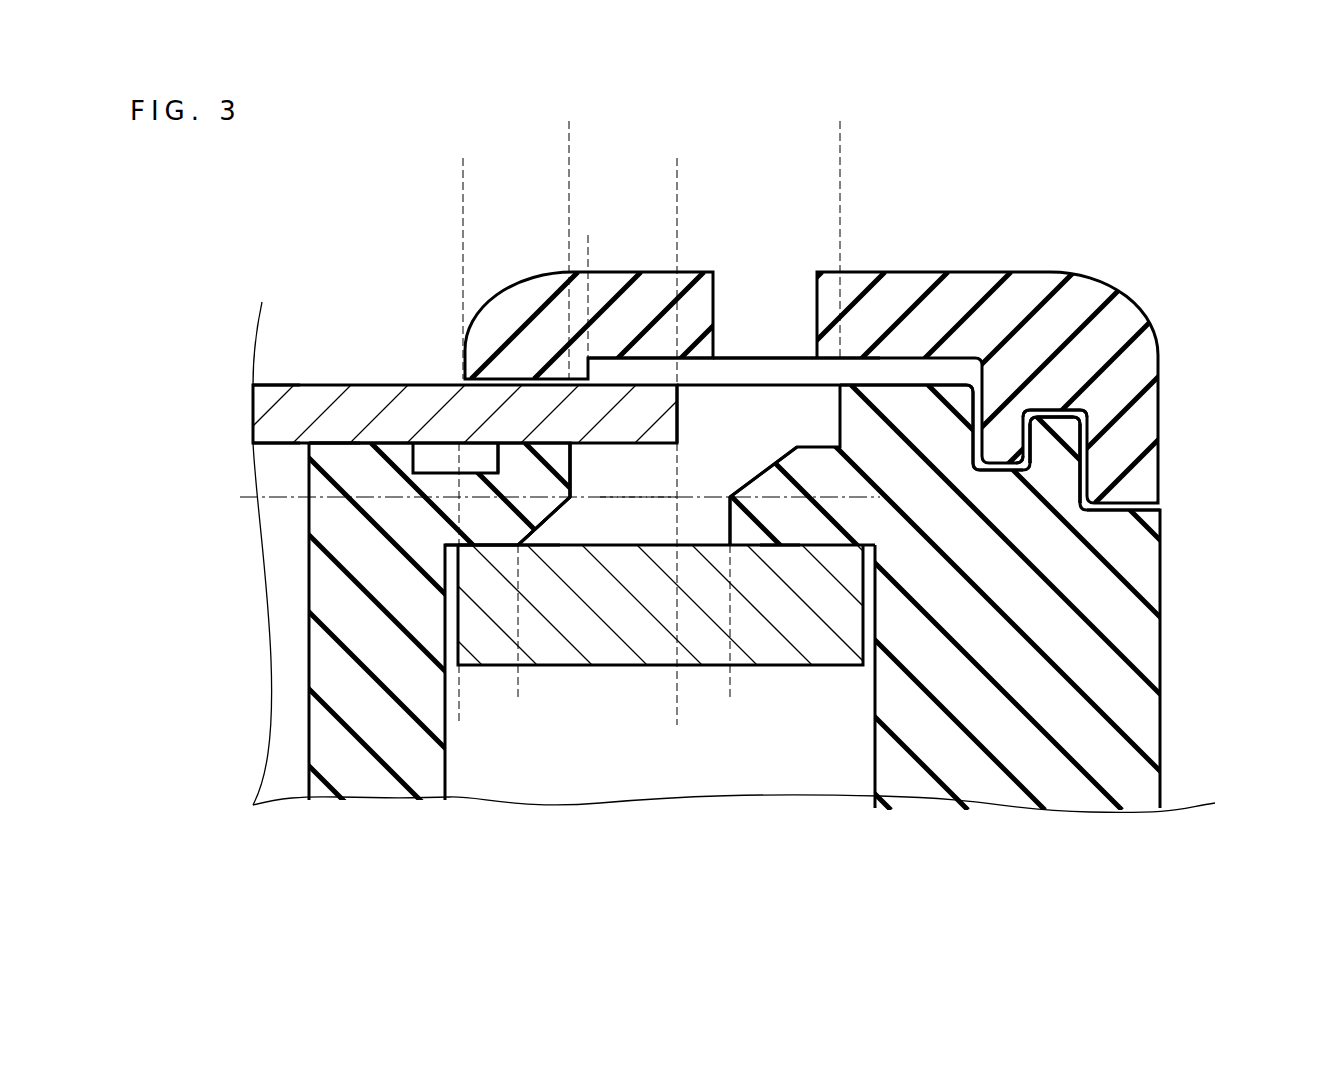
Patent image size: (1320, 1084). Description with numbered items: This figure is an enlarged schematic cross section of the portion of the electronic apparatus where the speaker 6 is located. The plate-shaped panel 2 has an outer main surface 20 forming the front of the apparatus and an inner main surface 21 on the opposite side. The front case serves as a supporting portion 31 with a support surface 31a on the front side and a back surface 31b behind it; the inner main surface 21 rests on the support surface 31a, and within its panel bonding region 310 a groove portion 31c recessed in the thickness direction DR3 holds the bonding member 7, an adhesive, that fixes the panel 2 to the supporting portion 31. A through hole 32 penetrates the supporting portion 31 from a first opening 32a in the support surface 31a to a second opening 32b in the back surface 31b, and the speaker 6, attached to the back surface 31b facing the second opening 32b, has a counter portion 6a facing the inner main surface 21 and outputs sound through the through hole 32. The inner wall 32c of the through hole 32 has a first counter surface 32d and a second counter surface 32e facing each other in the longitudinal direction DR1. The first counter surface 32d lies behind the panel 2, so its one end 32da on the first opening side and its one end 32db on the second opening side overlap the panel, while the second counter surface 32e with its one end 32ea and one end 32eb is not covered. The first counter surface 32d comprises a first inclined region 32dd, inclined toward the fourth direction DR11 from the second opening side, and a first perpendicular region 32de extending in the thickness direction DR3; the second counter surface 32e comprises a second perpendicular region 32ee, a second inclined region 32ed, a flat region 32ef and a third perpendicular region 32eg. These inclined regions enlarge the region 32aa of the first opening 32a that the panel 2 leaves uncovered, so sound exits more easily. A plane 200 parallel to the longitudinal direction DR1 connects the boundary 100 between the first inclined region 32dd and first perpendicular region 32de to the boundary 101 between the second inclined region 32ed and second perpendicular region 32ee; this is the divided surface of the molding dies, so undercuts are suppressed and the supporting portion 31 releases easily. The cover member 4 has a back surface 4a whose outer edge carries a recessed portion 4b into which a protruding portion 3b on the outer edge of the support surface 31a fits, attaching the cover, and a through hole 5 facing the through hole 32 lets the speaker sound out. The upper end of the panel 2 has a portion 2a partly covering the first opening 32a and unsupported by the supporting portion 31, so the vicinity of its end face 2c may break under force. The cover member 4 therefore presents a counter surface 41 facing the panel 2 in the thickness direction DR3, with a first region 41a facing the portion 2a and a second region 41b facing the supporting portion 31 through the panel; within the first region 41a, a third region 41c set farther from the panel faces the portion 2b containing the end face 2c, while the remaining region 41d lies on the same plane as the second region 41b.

The panel 2 is at (293, 384).
The portion of the panel 2a is at (677, 493).
The portion of the panel 2b is at (677, 468).
The end face 2c is at (684, 395).
The protruding portion 3b is at (1073, 437).
The cover member 4 is at (509, 300).
The back surface 4a is at (868, 365).
The recessed portion 4b is at (1072, 410).
The through hole 5 is at (732, 300).
The speaker 6 is at (845, 657).
The counter portion 6a is at (677, 725).
The bonding member 7 is at (421, 462).
The outer main surface 20 is at (268, 384).
The inner main surface 21 is at (268, 446).
The supporting portion 31 is at (375, 783).
The support surface 31a is at (900, 385).
The back surface 31b is at (535, 555).
The groove portion 31c is at (432, 458).
The through hole 32 is at (762, 467).
The first opening 32a is at (840, 121).
The region 32aa is at (840, 158).
The second opening 32b is at (730, 697).
The inner wall 32c is at (768, 460).
The first counter surface 32d is at (197, 510).
The one end of the first counter surface 32da is at (476, 475).
The one end of the first counter surface 32db is at (530, 552).
The first inclined region 32dd is at (527, 537).
The first perpendicular region 32de is at (550, 513).
The second counter surface 32e is at (1238, 505).
The one end of the second counter surface 32ea is at (862, 385).
The one end of the second counter surface 32eb is at (710, 520).
The second inclined region 32ed is at (838, 442).
The second perpendicular region 32ee is at (1030, 560).
The flat region 32ef is at (835, 430).
The third perpendicular region 32eg is at (840, 418).
The counter surface 41 is at (675, 158).
The first region 41a is at (675, 203).
The second region 41b is at (569, 203).
The third region 41c is at (675, 235).
The region 41d is at (535, 235).
The boundary 100 is at (573, 497).
The boundary 101 is at (735, 492).
The plane 200 is at (643, 497).
The panel bonding region 310 is at (345, 440).
The longitudinal direction DR1 is at (990, 840).
The fourth direction DR11 is at (787, 838).
The thickness direction DR3 is at (998, 852).